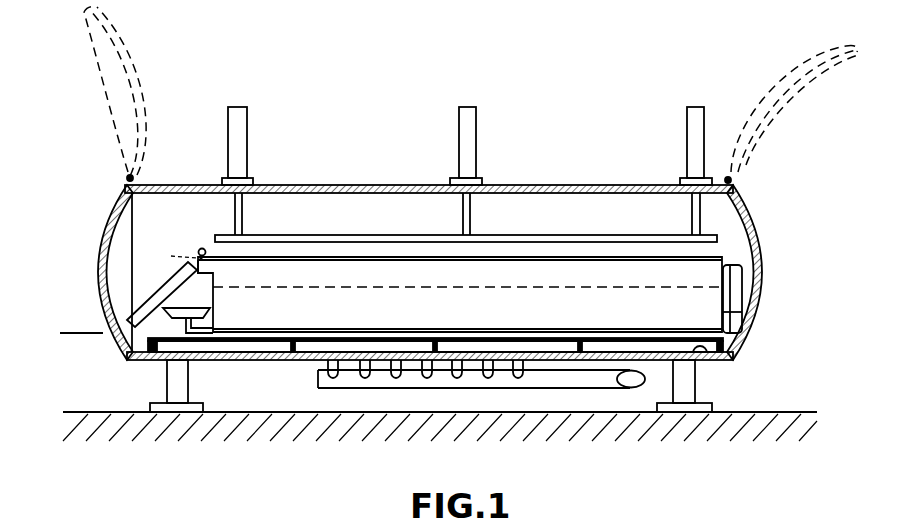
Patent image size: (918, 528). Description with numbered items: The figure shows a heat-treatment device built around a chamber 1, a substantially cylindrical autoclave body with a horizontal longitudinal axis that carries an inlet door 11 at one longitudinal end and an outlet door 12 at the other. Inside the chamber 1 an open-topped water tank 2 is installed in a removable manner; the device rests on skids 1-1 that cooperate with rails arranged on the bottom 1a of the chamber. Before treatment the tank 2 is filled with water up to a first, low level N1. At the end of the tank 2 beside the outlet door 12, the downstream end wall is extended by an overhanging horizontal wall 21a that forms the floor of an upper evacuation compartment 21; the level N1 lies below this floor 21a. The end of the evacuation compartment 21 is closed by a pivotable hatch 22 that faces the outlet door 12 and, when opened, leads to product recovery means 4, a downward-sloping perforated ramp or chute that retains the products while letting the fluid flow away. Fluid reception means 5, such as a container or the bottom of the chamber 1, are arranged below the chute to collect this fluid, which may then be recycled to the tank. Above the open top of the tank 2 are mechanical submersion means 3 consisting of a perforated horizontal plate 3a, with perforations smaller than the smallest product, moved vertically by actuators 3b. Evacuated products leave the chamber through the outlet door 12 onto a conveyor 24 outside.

The chamber 1 is at (347, 185).
The bottom of the chamber 1a is at (694, 351).
The skids 1-1 is at (260, 343).
The inlet door 11 is at (757, 218).
The outlet door 12 is at (103, 227).
The water tank 2 is at (577, 270).
The evacuation compartment 21 is at (200, 250).
The floor of the evacuation compartment 21a is at (205, 276).
The pivotable hatch 22 is at (173, 248).
The mechanical submersion means 3 is at (467, 158).
The perforated plate 3a is at (534, 240).
The actuators 3b is at (476, 157).
The product recovery means 4 is at (142, 307).
The fluid reception means 5 is at (198, 320).
The conveyor 24 is at (71, 331).
The low level N1 is at (356, 287).